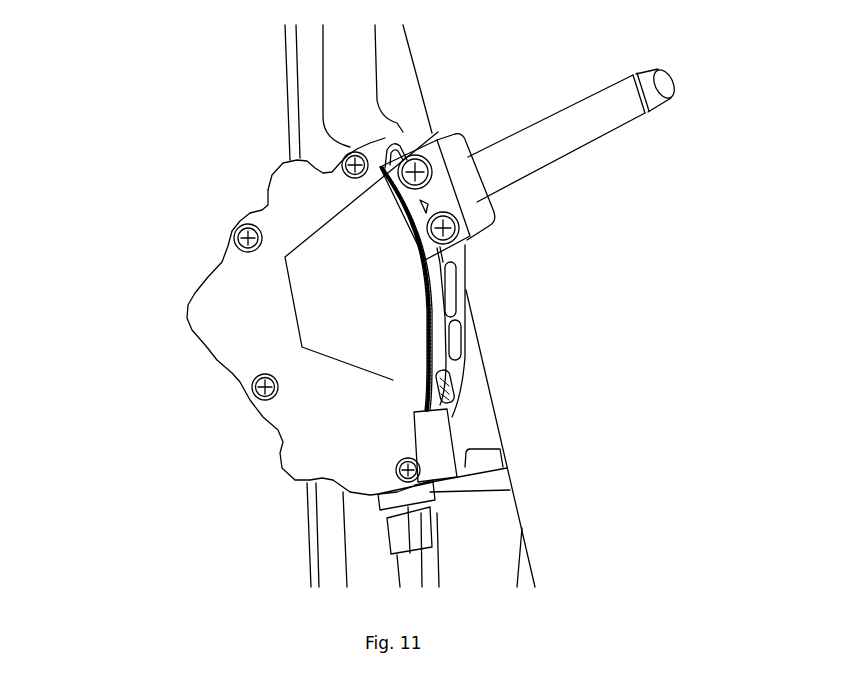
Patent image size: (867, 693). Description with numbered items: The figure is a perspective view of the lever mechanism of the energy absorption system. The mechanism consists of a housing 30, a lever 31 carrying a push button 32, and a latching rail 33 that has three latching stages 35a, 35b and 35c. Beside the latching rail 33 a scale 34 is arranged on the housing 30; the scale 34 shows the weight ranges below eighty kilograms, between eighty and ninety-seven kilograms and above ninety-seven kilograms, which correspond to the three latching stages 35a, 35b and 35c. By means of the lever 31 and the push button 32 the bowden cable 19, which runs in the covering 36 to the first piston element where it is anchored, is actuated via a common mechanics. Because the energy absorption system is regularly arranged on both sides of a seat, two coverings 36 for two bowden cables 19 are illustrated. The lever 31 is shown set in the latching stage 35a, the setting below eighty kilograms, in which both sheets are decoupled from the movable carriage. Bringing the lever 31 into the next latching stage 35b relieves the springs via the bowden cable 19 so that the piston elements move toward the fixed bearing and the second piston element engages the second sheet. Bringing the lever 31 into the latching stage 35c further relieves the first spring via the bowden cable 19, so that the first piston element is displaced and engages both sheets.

The bowden cable 19 is at (410, 583).
The housing 30 is at (207, 327).
The lever 31 is at (550, 147).
The push button 32 is at (655, 90).
The latching rail 33 is at (405, 130).
The scale 34 is at (317, 275).
The latching stage 35a is at (470, 157).
The latching stage 35b is at (453, 273).
The latching stage 35c is at (458, 338).
The covering 36 is at (418, 543).